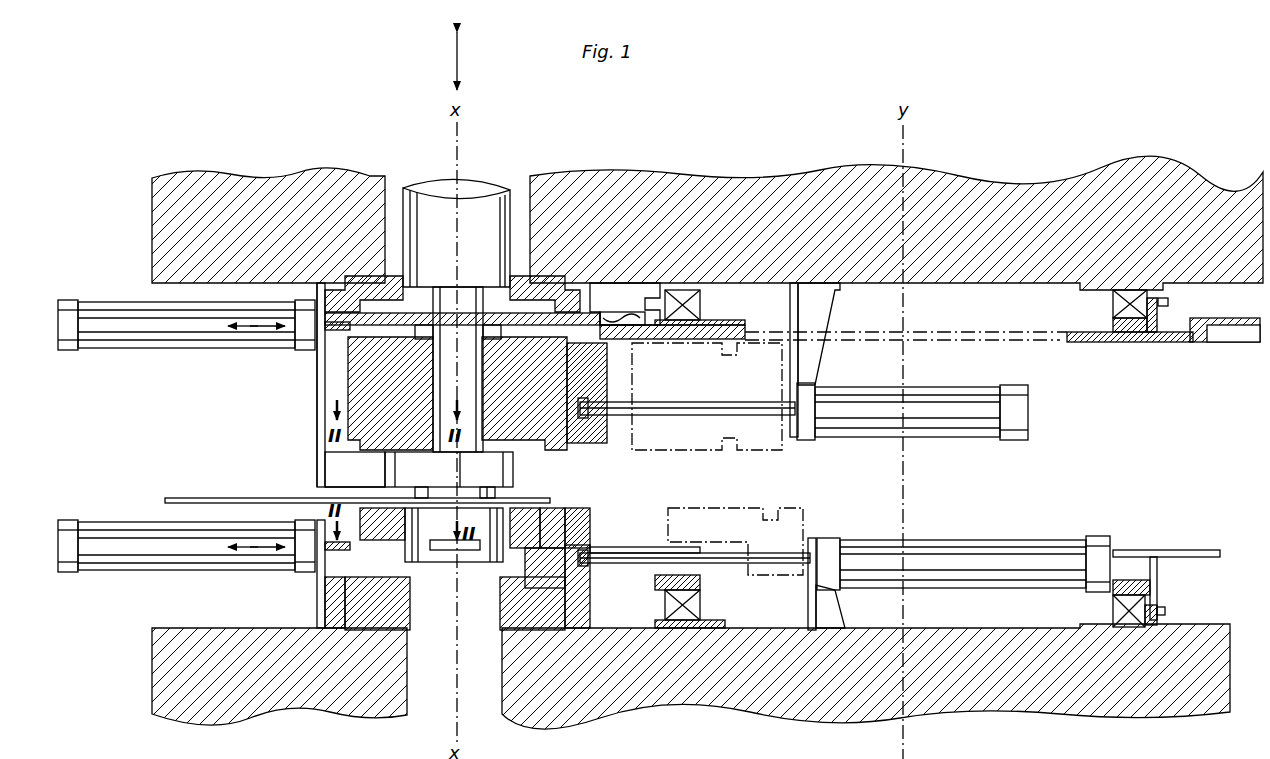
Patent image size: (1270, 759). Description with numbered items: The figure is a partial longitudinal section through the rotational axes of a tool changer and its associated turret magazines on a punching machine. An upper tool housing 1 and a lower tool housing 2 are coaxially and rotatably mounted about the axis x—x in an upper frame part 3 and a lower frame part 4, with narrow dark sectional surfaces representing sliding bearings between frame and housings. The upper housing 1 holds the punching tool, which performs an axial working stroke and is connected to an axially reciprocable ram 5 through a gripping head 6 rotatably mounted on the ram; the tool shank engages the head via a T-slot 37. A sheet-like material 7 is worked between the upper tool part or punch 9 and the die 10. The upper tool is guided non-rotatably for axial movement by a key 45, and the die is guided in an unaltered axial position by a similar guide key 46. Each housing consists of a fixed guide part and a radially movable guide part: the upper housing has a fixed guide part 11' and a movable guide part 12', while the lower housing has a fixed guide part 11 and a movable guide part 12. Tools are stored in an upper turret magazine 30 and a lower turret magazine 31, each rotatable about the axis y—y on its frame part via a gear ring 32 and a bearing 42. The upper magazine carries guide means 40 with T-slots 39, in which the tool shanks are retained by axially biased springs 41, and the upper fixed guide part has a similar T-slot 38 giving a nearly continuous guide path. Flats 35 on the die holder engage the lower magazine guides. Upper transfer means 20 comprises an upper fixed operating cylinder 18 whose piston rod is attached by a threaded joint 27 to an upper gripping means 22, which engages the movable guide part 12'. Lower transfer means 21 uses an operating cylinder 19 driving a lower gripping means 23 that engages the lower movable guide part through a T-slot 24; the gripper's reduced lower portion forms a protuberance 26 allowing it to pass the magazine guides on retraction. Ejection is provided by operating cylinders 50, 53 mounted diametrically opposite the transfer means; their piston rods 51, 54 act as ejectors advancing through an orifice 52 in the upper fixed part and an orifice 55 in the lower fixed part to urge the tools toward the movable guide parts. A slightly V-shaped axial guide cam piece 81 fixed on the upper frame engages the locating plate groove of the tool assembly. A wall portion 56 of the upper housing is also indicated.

The upper tool housing 1 is at (310, 402).
The lower tool housing 2 is at (310, 601).
The upper frame part 3 is at (772, 233).
The lower frame part 4 is at (760, 683).
The ram 5 is at (470, 198).
The gripping head 6 is at (462, 320).
The sheet-like material 7 is at (185, 498).
The punch 9 is at (500, 470).
The die 10 is at (420, 548).
The fixed guide part 11 is at (455, 618).
The fixed guide part 11' is at (390, 393).
The movable guide part 12 is at (553, 512).
The movable guide part 12' is at (524, 393).
The upper fixed operating cylinder 18 is at (930, 400).
The operating cylinder 19 is at (1000, 545).
The upper transfer means 20 is at (612, 386).
The lower transfer means 21 is at (598, 541).
The upper gripping means 22 is at (590, 435).
The lower gripping means 23 is at (565, 512).
The T-slot 24 is at (578, 522).
The protuberance 26 is at (570, 594).
The threaded joint 27 is at (606, 415).
The upper turret magazine 30 is at (1090, 343).
The lower turret magazine 31 is at (1142, 550).
The gear ring 32 is at (1168, 302).
The flats 35 is at (462, 550).
The T-slot 37 is at (428, 330).
The T-slot 38 is at (495, 330).
The T-slots 39 is at (610, 338).
The guide means 40 is at (612, 322).
The springs 41 is at (582, 320).
The bearing 42 is at (1113, 305).
The key 45 is at (480, 440).
The guide key 46 is at (543, 497).
The operating cylinder 50 is at (138, 322).
The piston rod 51 is at (332, 332).
The orifice 52 is at (416, 320).
The operating cylinder 53 is at (150, 545).
The piston rod 54 is at (340, 550).
The orifice 55 is at (395, 548).
The housing wall 56 is at (316, 432).
The guide cam piece 81 is at (358, 472).